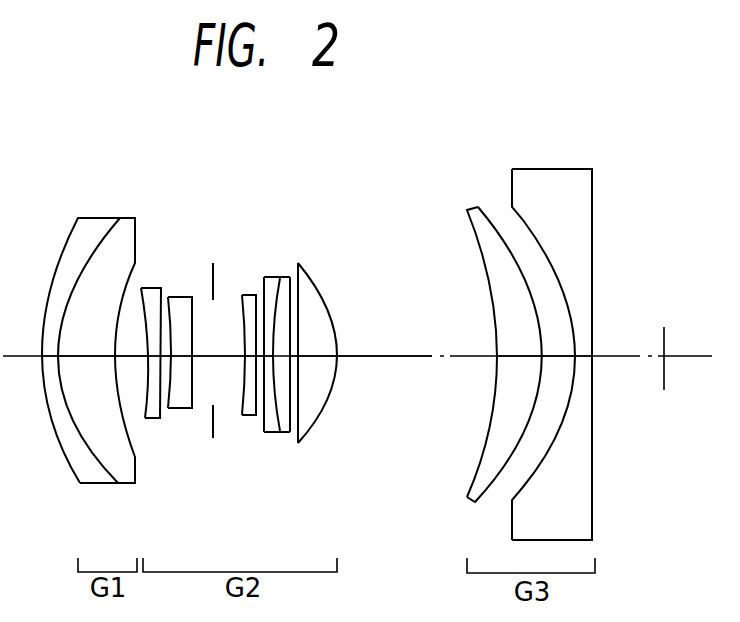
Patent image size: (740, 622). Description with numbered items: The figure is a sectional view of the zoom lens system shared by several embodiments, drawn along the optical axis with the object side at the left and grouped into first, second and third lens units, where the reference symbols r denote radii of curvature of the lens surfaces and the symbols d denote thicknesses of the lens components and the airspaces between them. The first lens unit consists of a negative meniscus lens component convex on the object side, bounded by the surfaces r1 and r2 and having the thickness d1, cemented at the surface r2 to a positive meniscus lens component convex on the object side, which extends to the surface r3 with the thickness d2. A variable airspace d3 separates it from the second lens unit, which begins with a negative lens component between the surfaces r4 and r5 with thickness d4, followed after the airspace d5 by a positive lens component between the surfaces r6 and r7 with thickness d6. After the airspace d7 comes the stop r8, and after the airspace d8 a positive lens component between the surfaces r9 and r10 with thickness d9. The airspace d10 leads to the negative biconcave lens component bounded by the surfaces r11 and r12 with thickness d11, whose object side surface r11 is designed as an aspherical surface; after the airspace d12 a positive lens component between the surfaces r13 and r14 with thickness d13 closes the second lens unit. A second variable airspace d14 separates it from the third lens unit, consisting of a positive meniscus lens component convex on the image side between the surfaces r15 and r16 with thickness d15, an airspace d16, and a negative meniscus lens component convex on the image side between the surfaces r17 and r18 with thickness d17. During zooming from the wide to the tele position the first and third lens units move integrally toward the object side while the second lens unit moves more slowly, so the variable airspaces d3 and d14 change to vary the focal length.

The radius of curvature of the first surface r1 is at (70, 228).
The radius of curvature of the second surface r2 is at (101, 243).
The radius of curvature of the third surface r3 is at (131, 263).
The radius of curvature of the fourth surface r4 is at (141, 288).
The radius of curvature of the fifth surface r5 is at (161, 290).
The radius of curvature of the sixth surface r6 is at (168, 297).
The radius of curvature of the seventh surface r7 is at (191, 297).
The stop r8 is at (211, 263).
The radius of curvature of the ninth surface r9 is at (242, 298).
The radius of curvature of the tenth surface r10 is at (256, 296).
The radius of curvature of the eleventh surface r11 is at (264, 303).
The radius of curvature of the twelfth surface r12 is at (277, 277).
The radius of curvature of the thirteenth surface r13 is at (298, 280).
The radius of curvature of the fourteenth surface r14 is at (319, 272).
The radius of curvature of the fifteenth surface r15 is at (468, 232).
The radius of curvature of the sixteenth surface r16 is at (487, 220).
The radius of curvature of the seventeenth surface r17 is at (530, 221).
The radius of curvature of the eighteenth surface r18 is at (593, 190).
The thickness of the first lens component d1 is at (50, 357).
The thickness of the second lens component d2 is at (86, 357).
The variable airspace between first and second lens units d3 is at (127, 355).
The thickness of the negative lens component d4 is at (152, 357).
The airspace d5 is at (165, 357).
The thickness of the positive lens component d6 is at (180, 357).
The airspace d7 is at (201, 357).
The airspace d8 is at (227, 357).
The thickness of the positive lens component d9 is at (248, 357).
The airspace d10 is at (262, 355).
The thickness of the biconcave lens component d11 is at (271, 357).
The airspace d12 is at (293, 357).
The thickness of the positive lens component d13 is at (313, 357).
The variable airspace between second and third lens units d14 is at (390, 357).
The thickness of the positive meniscus lens component d15 is at (512, 358).
The airspace d16 is at (557, 358).
The thickness of the negative meniscus lens component d17 is at (587, 358).